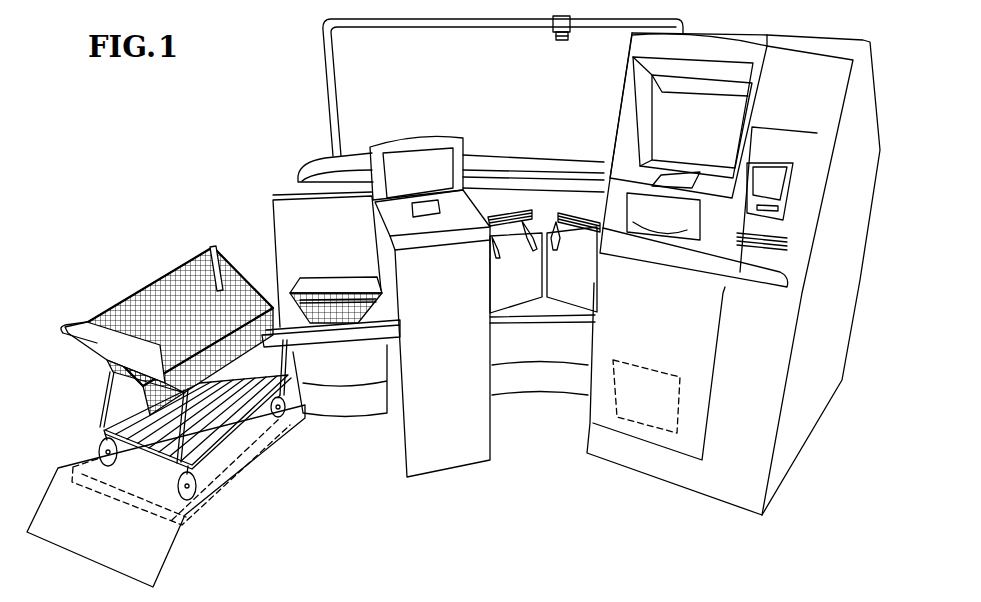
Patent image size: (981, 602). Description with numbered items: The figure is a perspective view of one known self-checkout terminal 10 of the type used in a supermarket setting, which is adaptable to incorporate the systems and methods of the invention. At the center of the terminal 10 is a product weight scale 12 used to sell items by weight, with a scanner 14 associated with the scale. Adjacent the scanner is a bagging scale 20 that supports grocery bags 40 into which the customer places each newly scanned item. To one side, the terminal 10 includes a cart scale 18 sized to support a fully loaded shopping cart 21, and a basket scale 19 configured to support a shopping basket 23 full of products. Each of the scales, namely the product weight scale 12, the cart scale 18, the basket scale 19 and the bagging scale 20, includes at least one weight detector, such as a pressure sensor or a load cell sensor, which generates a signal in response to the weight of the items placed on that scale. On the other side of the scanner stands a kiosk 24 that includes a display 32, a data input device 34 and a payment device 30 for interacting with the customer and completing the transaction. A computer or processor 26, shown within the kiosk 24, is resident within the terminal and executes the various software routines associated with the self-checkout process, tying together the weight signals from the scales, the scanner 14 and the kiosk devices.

The self-checkout terminal 10 is at (230, 105).
The product weight scale 12 is at (398, 225).
The scanner 14 is at (437, 137).
The cart scale 18 is at (233, 493).
The basket scale 19 is at (335, 352).
The bagging scale 20 is at (580, 320).
The shopping cart 21 is at (157, 275).
The shopping basket 23 is at (338, 284).
The kiosk 24 is at (860, 137).
The computer or processor 26 is at (657, 377).
The payment device 30 is at (780, 208).
The display 32 is at (673, 112).
The data input device 34 is at (677, 182).
The grocery bags 40 is at (500, 296).